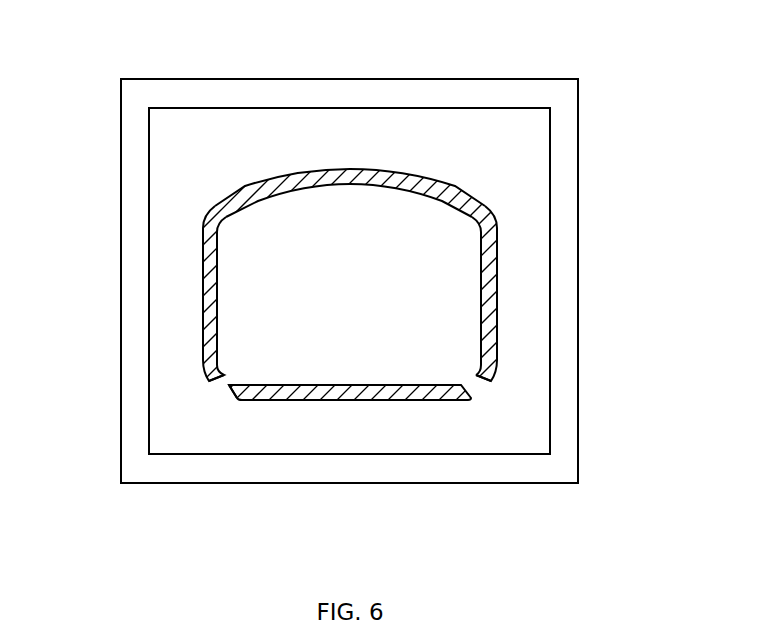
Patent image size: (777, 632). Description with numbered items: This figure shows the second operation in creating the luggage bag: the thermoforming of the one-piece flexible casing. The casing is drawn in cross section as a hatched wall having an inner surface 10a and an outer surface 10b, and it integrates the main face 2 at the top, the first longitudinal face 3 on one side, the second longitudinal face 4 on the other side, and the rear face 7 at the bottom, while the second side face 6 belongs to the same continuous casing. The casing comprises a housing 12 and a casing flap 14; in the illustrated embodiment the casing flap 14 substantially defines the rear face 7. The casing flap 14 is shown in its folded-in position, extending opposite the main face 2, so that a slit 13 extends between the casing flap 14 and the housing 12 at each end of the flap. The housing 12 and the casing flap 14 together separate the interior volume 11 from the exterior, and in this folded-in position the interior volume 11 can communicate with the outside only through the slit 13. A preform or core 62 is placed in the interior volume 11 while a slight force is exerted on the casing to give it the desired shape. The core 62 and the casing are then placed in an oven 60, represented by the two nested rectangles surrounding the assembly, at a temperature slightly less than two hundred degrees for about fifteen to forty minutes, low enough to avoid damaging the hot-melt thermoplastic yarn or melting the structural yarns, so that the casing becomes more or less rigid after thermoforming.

The oven 60 is at (615, 78).
The housing 12 is at (188, 340).
The main face 2 is at (354, 178).
The second side face 6 is at (386, 221).
The first longitudinal face 3 is at (210, 258).
The second longitudinal face 4 is at (497, 255).
The outer surface 10b is at (497, 291).
The inner surface 10a is at (492, 331).
The interior volume 11 is at (364, 290).
The core 62 is at (393, 343).
The rear face 7 is at (320, 397).
The casing flap 14 is at (232, 413).
The slit 13 is at (216, 392).